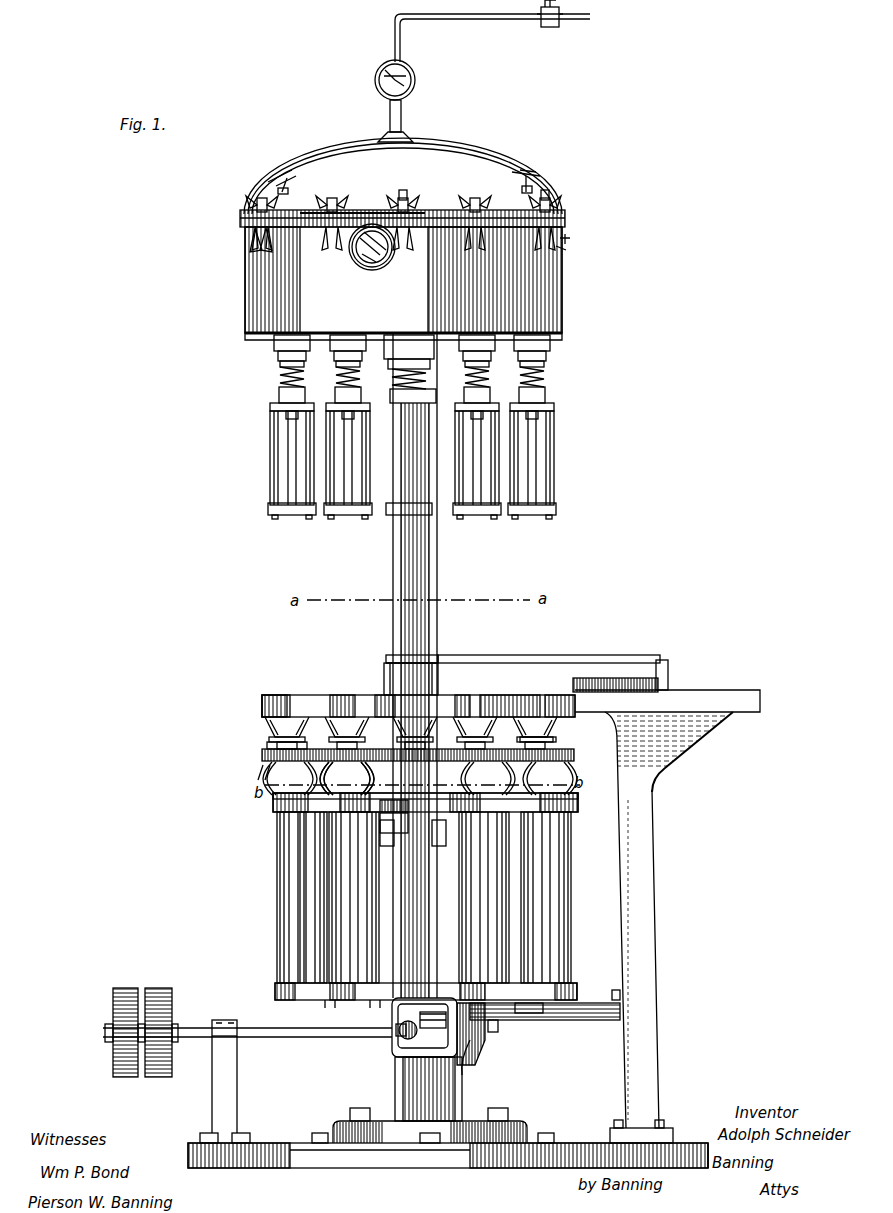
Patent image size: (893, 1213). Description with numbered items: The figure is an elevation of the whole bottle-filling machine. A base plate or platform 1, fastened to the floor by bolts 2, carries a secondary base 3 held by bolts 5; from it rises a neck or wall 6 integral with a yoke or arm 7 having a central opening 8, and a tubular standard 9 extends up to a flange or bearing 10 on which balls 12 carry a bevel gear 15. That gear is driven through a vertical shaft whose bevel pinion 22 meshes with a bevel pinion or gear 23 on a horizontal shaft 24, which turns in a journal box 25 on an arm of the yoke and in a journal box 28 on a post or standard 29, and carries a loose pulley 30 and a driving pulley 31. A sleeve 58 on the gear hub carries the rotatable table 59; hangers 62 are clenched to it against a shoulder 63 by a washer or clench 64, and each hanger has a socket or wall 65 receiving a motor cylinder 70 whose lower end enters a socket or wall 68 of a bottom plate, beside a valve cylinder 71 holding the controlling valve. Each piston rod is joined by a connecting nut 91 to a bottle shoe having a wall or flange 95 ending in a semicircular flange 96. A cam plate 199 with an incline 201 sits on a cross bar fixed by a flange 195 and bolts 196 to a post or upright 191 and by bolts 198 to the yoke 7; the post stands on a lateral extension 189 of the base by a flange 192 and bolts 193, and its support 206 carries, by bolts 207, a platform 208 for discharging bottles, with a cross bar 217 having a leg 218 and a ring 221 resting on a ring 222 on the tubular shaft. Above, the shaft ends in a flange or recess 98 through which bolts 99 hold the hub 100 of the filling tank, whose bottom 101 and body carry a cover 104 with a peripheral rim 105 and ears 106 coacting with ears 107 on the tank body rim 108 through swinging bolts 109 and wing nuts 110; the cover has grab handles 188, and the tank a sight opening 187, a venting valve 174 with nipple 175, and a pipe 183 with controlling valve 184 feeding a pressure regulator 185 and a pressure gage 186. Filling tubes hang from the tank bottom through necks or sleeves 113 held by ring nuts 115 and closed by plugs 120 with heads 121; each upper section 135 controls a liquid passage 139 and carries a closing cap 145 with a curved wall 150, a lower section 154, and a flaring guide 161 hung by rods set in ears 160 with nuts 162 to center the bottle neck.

The base plate or platform 1 is at (400, 1170).
The bolts 2 is at (436, 1150).
The plate or secondary base 3 is at (522, 1132).
The bolts 5 is at (360, 1108).
The neck or wall 6 is at (428, 1089).
The yoke or arm 7 is at (395, 1040).
The central opening 8 is at (466, 1060).
The tubular neck or standard 9 is at (393, 900).
The flange or bearing 10 is at (386, 826).
The balls 12 is at (380, 806).
The bevel gear 15 is at (273, 804).
The bevel pinion 22 is at (470, 1030).
The bevel pinion or gear 23 is at (400, 1036).
The horizontal shaft 24 is at (380, 1034).
The journal box 25 is at (398, 1032).
The journal box 28 is at (222, 1015).
The post or standard 29 is at (237, 1070).
The loose pulley 30 is at (122, 990).
The fixed or driving pulley 31 is at (158, 990).
The sleeve 58 is at (392, 695).
The plate or table 59 is at (262, 756).
The hanger 62 is at (374, 778).
The shoulder 63 is at (264, 772).
The washer or clench 64 is at (556, 740).
The socket or wall 65 is at (578, 804).
The socket or wall 68 is at (275, 990).
The motor cylinder 70 is at (290, 874).
The cylinder 71 is at (330, 892).
The connecting nut 91 is at (272, 744).
The flange or wall 95 is at (265, 706).
The semi-circular wall or flange 96 is at (300, 703).
The annular flange or recess 98 is at (418, 376).
The bolts 99 is at (425, 362).
The hub or center 100 is at (420, 340).
The bottom wall 101 is at (356, 272).
The cover 104 is at (403, 176).
The peripheral rim 105 is at (364, 213).
The ears 106 is at (240, 215).
The ears 107 is at (250, 230).
The gasket 108 is at (352, 255).
The swinging bolt 109 is at (405, 198).
The wing nut 110 is at (252, 206).
The neck or sleeve 113 is at (278, 355).
The ring nut or sleeve 115 is at (274, 343).
The plug or sleeve 120 is at (280, 364).
The head 121 is at (280, 376).
The upper section of the filling tube 135 is at (279, 394).
The liquid passage 139 is at (278, 470).
The closing head or cap 145 is at (270, 408).
The curved wall 150 is at (270, 440).
The lower section of the filling tube 154 is at (290, 480).
The ear 160 is at (282, 519).
The funnel shaped or flaring guide 161 is at (272, 512).
The nuts 162 is at (282, 416).
The valve 174 is at (568, 246).
The nipple 175 is at (572, 236).
The pipe 183 is at (466, 20).
The controlling valve 184 is at (550, 27).
The pressure regulator 185 is at (405, 108).
The pressure gage 186 is at (416, 80).
The sight opening 187 is at (376, 268).
The grab handles 188 is at (286, 172).
The lateral extension 189 is at (690, 1130).
The post or upright 191 is at (650, 920).
The flange 192 is at (641, 1128).
The bolts 193 is at (616, 1120).
The flange 195 is at (616, 990).
The bolts 196 is at (663, 960).
The bolts 198 is at (496, 1028).
The plate or cam 199 is at (528, 1015).
The incline 201 is at (522, 1013).
The support 206 is at (676, 752).
The bolts 207 is at (612, 690).
The platform 208 is at (667, 701).
The cross bar 217 is at (568, 655).
The leg 218 is at (668, 674).
The ring 221 is at (434, 657).
The ring 222 is at (392, 657).